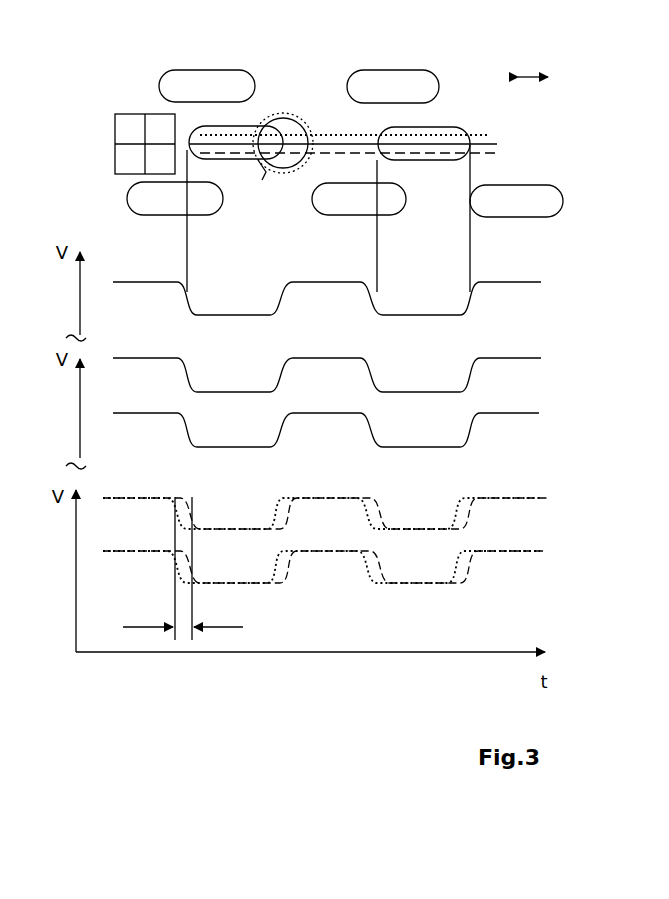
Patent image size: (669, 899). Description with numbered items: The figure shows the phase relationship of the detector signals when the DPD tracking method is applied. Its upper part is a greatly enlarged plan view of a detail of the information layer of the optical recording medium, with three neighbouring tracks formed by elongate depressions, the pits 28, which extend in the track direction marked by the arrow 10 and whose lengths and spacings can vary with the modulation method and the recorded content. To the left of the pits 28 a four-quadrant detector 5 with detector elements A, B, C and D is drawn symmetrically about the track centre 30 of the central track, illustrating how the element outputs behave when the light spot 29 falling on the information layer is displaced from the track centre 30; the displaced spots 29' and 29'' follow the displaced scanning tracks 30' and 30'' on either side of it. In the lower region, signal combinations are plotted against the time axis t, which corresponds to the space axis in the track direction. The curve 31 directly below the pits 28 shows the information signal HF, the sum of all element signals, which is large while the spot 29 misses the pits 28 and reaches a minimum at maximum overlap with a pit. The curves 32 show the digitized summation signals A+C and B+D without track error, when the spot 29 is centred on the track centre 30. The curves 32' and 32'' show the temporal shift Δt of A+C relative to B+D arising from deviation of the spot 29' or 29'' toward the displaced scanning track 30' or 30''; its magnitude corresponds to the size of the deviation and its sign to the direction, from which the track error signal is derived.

The four-quadrant detector 5 is at (112, 143).
The arrow indicating track direction 10 is at (538, 70).
The pits 28 is at (188, 78).
The light spot 29 is at (283, 168).
The displaced light spot 29' is at (294, 110).
The displaced light spot 29'' is at (255, 185).
The track centre 30 is at (372, 134).
The displaced scanning track 30' is at (380, 115).
The displaced scanning track 30'' is at (381, 162).
The curve of information signal HF 31 is at (350, 293).
The curves of summation signals without track error 32 is at (357, 395).
The curves of temporally shifted summation signals 32' is at (348, 565).
The curves of temporally shifted summation signals 32'' is at (380, 536).